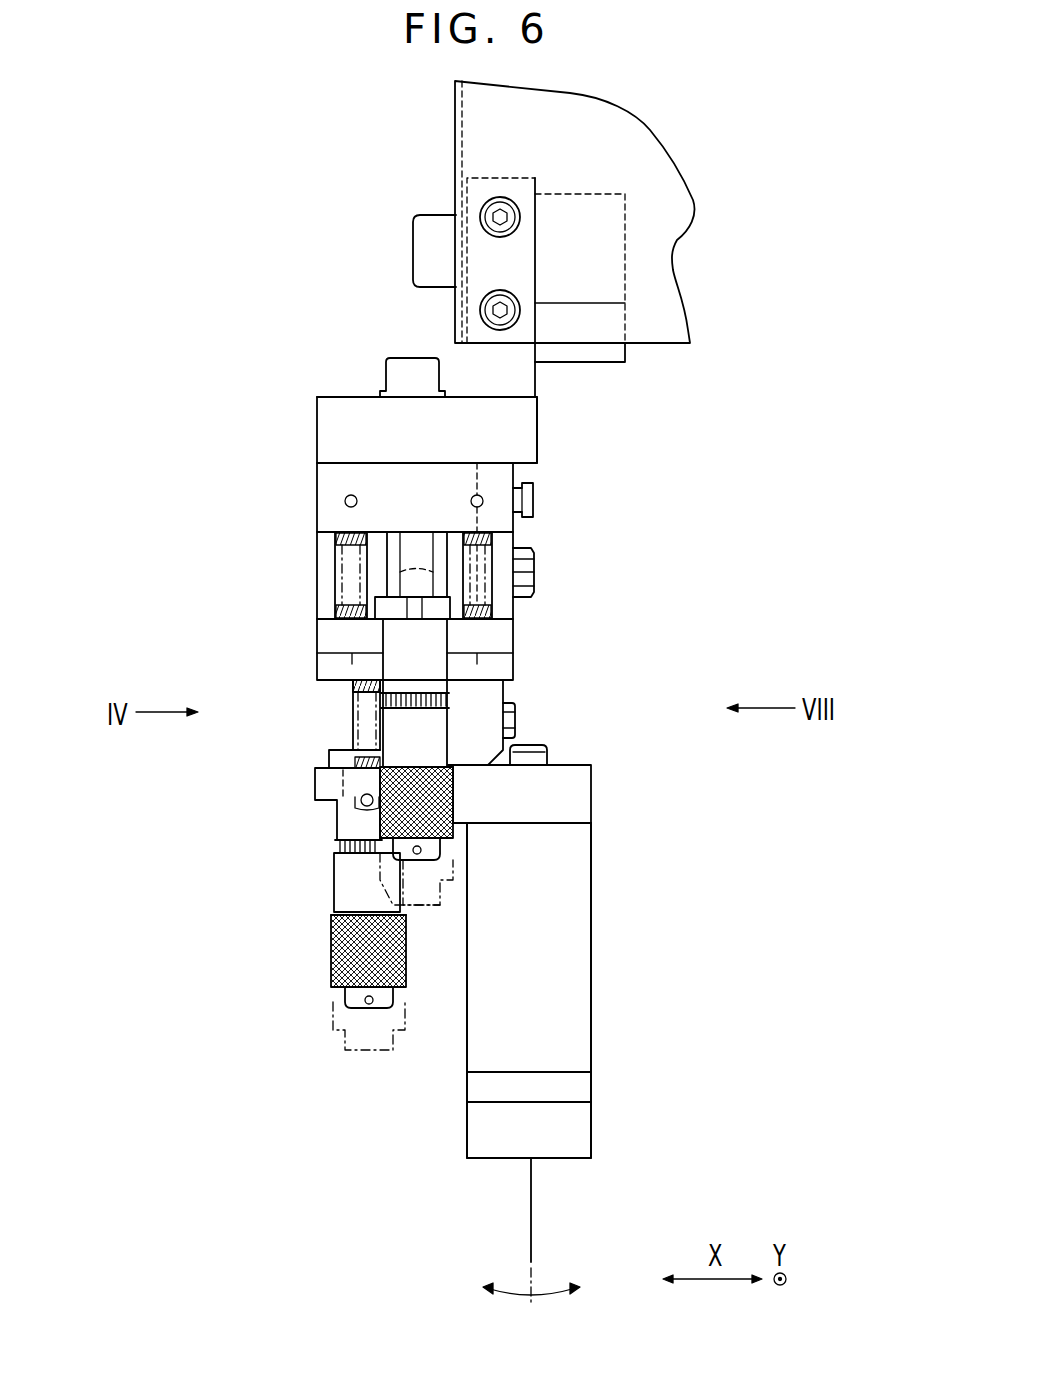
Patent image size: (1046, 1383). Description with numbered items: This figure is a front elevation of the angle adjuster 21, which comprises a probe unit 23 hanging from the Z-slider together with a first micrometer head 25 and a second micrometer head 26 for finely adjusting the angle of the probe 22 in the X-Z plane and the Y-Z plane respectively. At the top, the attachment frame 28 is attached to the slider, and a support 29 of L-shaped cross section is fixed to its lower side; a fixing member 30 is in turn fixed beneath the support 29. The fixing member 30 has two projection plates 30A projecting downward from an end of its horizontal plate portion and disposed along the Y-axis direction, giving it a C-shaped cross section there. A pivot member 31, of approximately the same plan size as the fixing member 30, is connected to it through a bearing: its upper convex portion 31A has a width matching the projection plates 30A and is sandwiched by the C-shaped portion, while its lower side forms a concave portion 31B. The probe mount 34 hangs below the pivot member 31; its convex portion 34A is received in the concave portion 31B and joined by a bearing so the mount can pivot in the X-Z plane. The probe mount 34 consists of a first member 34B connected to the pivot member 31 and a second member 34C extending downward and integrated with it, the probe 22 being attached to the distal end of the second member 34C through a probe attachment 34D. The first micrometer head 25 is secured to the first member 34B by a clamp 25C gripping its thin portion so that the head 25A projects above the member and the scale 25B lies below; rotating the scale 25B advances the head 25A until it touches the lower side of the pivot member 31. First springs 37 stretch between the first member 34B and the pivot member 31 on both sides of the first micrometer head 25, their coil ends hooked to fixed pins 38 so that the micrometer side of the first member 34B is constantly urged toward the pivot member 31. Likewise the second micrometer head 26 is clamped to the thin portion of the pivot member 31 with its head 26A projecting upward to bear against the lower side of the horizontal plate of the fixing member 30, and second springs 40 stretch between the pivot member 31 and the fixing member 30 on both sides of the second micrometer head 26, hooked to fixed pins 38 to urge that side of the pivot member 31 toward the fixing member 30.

The angle adjuster 21 is at (388, 302).
The probe 22 is at (533, 1198).
The probe unit 23 is at (337, 397).
The first micrometer head 25 is at (331, 962).
The head 25A is at (352, 720).
The scale 25B is at (343, 887).
The clamp 25C is at (329, 752).
The second micrometer head 26 is at (343, 826).
The head 26A is at (387, 567).
The attachment frame 28 is at (650, 333).
The support 29 is at (518, 437).
The fixing member 30 is at (333, 483).
The projection plate 30A is at (320, 558).
The pivot member 31 is at (517, 668).
The convex portion 31A is at (435, 570).
The concave portion 31B is at (482, 702).
The probe mount 34 is at (680, 785).
The convex portion 34A is at (493, 768).
The first member 34B is at (577, 815).
The second member 34C is at (547, 917).
The probe attachment 34D is at (588, 1118).
The first spring 37 is at (352, 689).
The fixed pin 38 is at (345, 501).
The second spring 40 is at (336, 612).